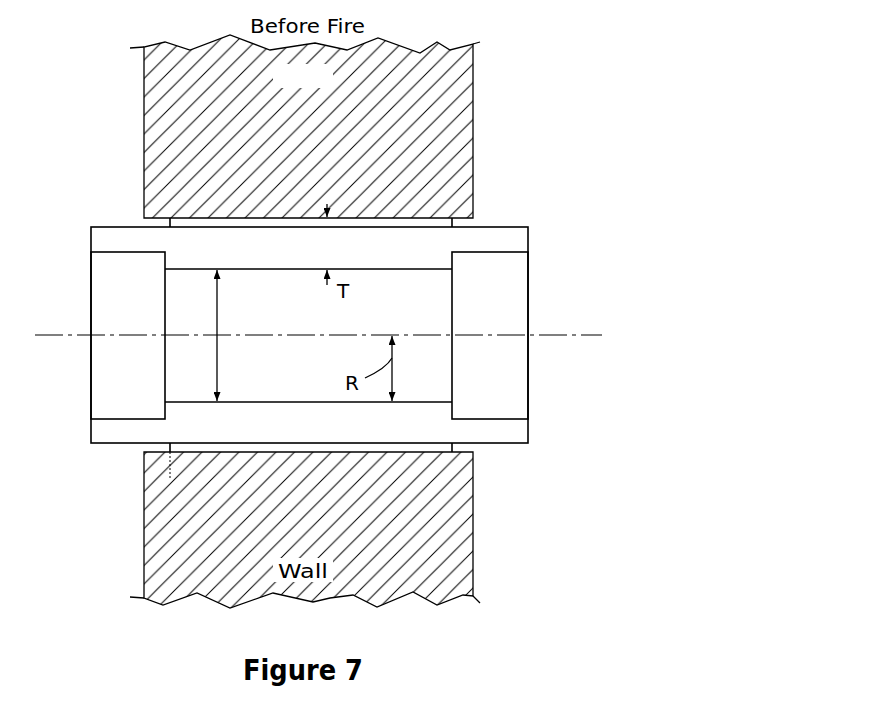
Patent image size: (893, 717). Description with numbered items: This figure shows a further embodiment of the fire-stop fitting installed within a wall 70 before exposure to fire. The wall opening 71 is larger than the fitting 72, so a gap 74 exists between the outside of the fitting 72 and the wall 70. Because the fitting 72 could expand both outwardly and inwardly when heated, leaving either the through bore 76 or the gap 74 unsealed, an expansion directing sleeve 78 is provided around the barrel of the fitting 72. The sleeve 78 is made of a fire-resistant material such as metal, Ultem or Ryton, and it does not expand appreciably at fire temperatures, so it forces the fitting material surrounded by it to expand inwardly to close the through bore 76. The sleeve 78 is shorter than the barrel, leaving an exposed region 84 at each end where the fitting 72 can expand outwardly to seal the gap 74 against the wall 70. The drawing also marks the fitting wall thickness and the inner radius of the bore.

The wall 70 is at (473, 91).
The wall opening 71 is at (147, 225).
The fitting 72 is at (91, 238).
The gap 74 is at (162, 248).
The through bore 76 is at (217, 318).
The expansion directing sleeve 78 is at (453, 226).
The exposed region 84 is at (220, 470).